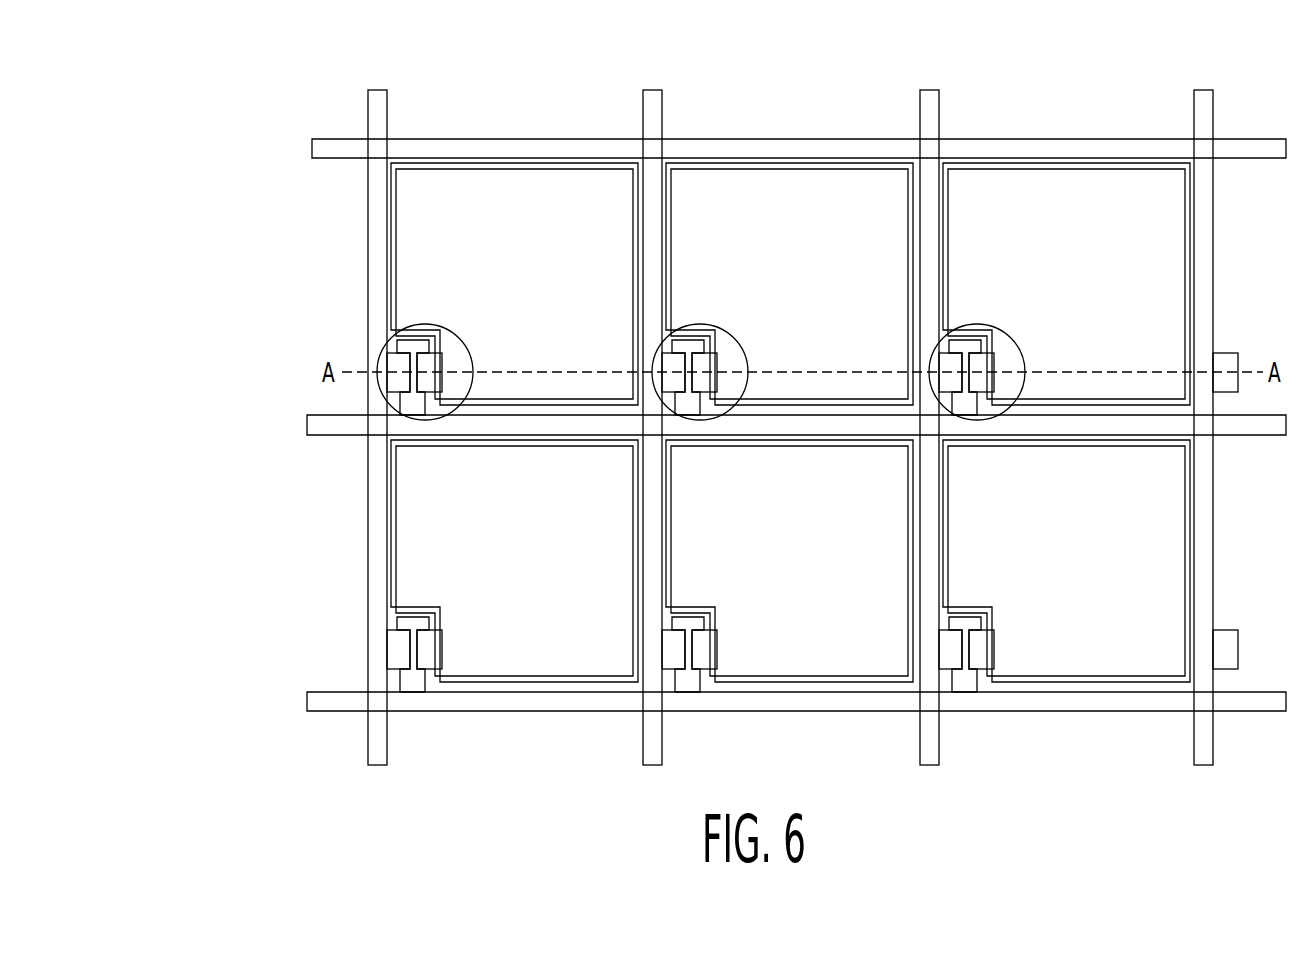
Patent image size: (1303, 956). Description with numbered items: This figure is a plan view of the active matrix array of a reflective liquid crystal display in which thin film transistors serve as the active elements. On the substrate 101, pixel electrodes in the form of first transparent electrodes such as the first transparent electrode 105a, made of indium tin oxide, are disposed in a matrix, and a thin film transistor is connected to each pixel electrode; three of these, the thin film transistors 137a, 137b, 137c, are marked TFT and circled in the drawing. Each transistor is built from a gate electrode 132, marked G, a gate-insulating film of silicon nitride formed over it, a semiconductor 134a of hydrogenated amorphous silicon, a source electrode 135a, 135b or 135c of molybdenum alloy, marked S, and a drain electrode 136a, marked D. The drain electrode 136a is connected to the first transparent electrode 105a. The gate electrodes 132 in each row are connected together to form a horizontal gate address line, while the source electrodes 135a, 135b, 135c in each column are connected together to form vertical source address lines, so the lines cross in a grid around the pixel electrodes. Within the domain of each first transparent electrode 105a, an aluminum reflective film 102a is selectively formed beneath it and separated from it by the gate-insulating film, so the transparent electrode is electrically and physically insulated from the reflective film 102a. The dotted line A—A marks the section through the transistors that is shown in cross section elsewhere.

The substrate 101 is at (312, 567).
The reflective film 102a is at (396, 292).
The first transparent electrode 105a is at (398, 245).
The gate electrode 132 is at (312, 143).
The semiconductor 134a is at (398, 347).
The source electrode 135a is at (380, 97).
The source electrode 135b is at (655, 97).
The source electrode 135c is at (932, 97).
The drain electrode 136a is at (453, 358).
The thin film transistor 137a is at (473, 358).
The thin film transistor 137b is at (748, 358).
The thin film transistor 137c is at (1025, 358).